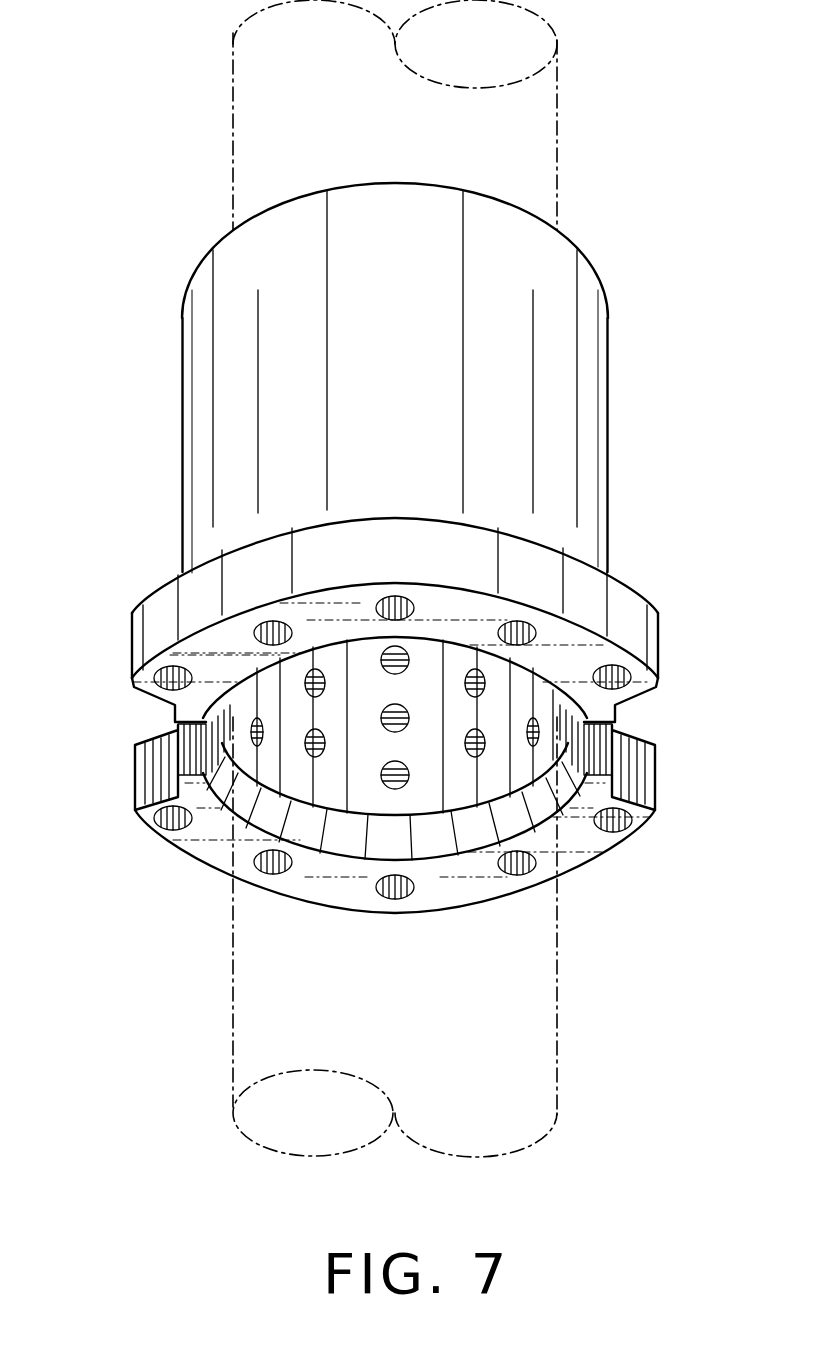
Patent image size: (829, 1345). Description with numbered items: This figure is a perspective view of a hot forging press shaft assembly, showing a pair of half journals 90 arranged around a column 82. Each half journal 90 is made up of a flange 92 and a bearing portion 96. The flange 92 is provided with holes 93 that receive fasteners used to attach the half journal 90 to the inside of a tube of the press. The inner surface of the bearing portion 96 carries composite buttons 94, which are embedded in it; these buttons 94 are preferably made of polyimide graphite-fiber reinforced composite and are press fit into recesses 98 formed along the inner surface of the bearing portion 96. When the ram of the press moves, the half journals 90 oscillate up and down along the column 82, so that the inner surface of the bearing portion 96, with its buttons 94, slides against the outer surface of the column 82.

The column 82 is at (492, 133).
The half journal 90 is at (641, 586).
The flange 92 is at (170, 613).
The holes 93 is at (392, 596).
The composite buttons 94 is at (392, 789).
The bearing portion 96 is at (503, 408).
The recesses 98 is at (408, 728).